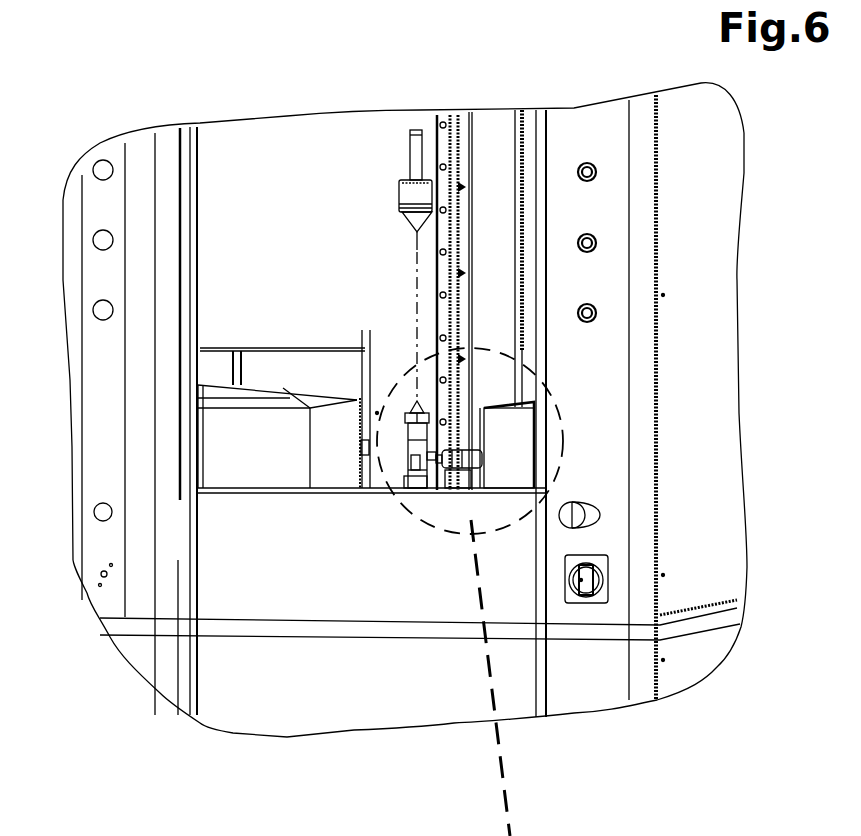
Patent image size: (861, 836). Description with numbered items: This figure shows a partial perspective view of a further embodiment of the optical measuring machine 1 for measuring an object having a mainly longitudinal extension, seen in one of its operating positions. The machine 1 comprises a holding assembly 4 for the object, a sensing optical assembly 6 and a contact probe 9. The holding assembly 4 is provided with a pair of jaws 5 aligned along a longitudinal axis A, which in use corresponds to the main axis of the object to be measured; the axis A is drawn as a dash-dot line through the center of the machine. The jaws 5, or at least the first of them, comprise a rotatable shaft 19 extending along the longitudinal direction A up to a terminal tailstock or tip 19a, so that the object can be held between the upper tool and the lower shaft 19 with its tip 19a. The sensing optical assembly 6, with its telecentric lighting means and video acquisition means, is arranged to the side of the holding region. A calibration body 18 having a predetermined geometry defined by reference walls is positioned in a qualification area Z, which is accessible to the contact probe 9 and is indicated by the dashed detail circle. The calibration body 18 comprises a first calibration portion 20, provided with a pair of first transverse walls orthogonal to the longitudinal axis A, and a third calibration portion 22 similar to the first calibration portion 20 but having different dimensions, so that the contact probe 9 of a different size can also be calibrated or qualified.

The optical measuring machine 1 is at (84, 96).
The holding assembly 4 is at (418, 126).
The jaws 5 is at (405, 193).
The sensing optical assembly 6 is at (243, 438).
The contact probe 9 is at (483, 451).
The calibration body 18 is at (394, 472).
The rotatable shaft 19 is at (428, 405).
The tip 19a is at (401, 421).
The first calibration portion 20 is at (446, 490).
The third calibration portion 22 is at (433, 483).
The longitudinal axis A is at (417, 300).
The qualification area Z is at (477, 495).